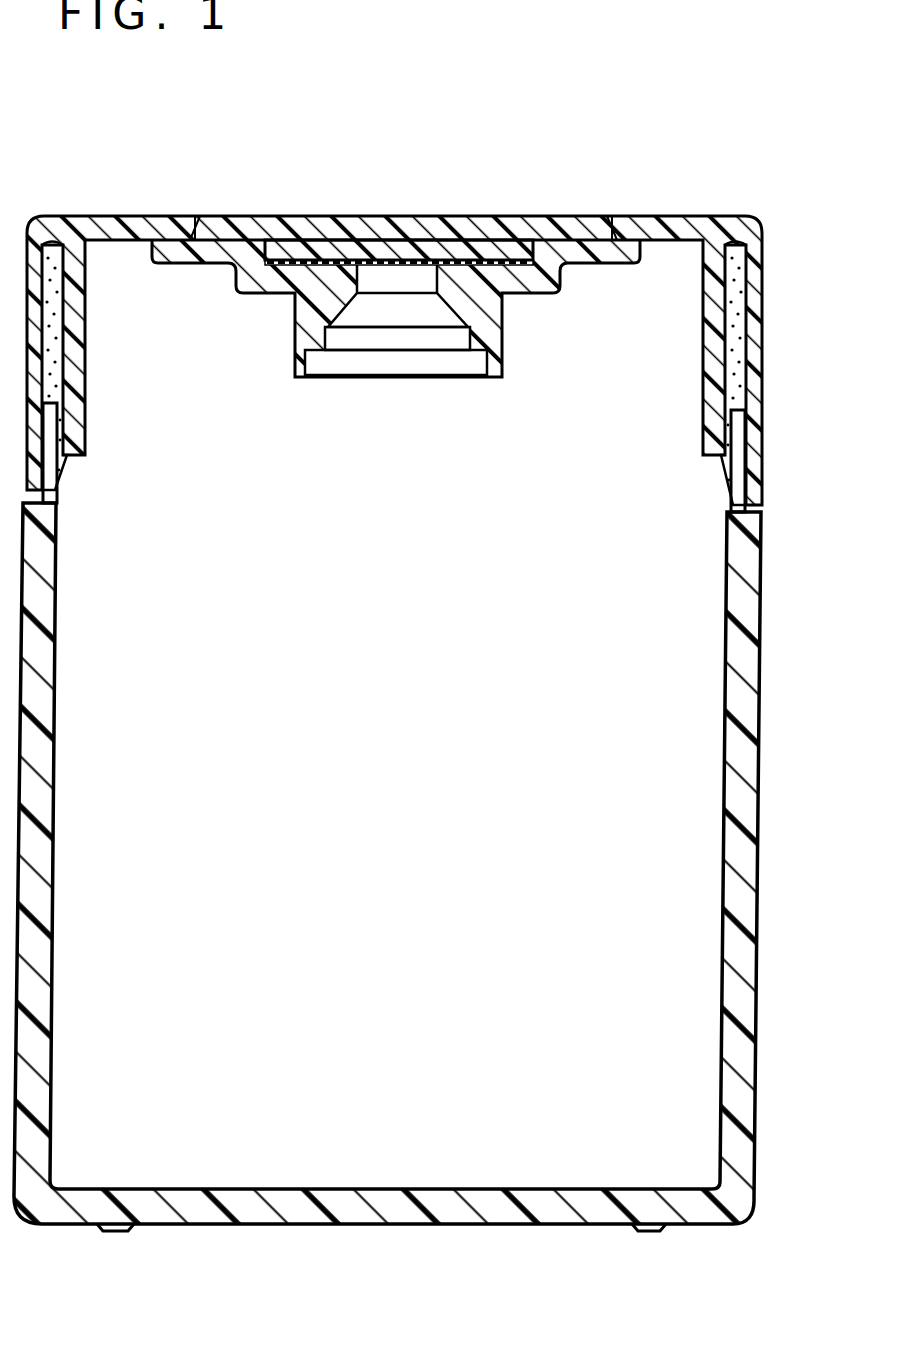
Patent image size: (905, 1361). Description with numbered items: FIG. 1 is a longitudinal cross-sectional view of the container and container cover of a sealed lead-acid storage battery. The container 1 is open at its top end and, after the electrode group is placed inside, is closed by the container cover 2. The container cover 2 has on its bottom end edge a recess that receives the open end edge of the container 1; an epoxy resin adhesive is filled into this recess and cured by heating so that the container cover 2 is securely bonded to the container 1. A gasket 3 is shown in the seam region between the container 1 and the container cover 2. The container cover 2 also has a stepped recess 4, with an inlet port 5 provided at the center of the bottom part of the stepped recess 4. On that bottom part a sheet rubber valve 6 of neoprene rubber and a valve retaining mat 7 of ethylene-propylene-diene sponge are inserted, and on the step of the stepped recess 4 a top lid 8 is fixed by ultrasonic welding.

The container 1 is at (748, 628).
The container cover 2 is at (706, 226).
The gasket 3 is at (745, 310).
The stepped recess 4 is at (551, 243).
The inlet port 5 is at (408, 283).
The sheet rubber valve 6 is at (293, 262).
The valve retaining mat 7 is at (348, 247).
The top lid 8 is at (447, 227).